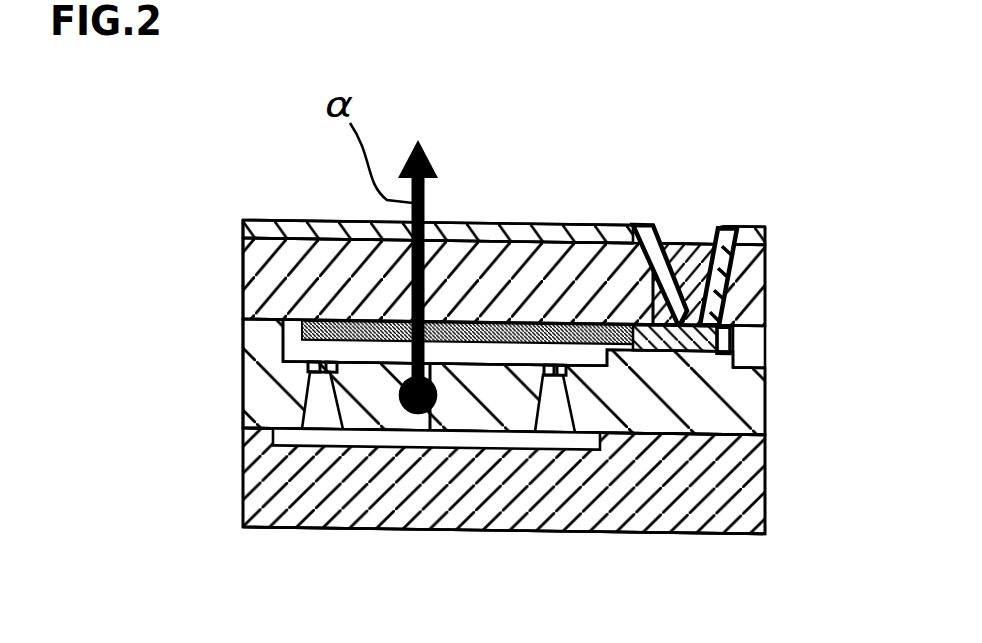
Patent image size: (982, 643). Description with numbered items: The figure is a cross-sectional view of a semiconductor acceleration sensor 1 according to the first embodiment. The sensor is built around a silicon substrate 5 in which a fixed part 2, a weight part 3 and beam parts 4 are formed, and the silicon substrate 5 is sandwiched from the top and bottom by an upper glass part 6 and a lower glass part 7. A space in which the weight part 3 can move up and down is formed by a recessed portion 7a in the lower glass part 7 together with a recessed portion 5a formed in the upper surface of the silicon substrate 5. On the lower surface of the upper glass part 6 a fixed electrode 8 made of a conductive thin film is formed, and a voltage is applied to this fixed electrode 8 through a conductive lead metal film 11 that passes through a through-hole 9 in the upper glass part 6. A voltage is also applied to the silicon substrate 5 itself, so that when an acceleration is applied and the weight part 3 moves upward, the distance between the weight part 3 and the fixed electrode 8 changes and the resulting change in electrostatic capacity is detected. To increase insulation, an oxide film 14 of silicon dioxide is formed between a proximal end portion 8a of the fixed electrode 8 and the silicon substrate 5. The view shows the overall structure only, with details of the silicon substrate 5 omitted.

The acceleration sensor 1 is at (622, 79).
The fixed part 2 is at (735, 413).
The weight part 3 is at (445, 412).
The beam parts 4 is at (308, 362).
The silicon substrate 5 is at (258, 405).
The recessed portion 5a is at (347, 357).
The upper glass part 6 is at (257, 263).
The lower glass part 7 is at (250, 505).
The recessed portion 7a is at (500, 445).
The fixed electrode 8 is at (465, 322).
The proximal end portion 8a is at (735, 340).
The through-hole 9 is at (692, 238).
The conductive lead metal film 11 is at (747, 228).
The oxide film 14 is at (722, 355).